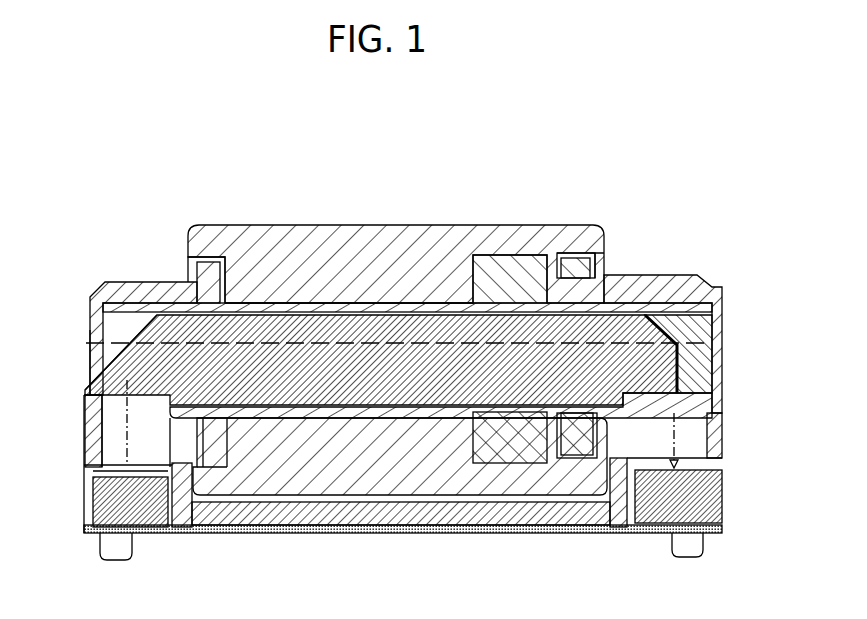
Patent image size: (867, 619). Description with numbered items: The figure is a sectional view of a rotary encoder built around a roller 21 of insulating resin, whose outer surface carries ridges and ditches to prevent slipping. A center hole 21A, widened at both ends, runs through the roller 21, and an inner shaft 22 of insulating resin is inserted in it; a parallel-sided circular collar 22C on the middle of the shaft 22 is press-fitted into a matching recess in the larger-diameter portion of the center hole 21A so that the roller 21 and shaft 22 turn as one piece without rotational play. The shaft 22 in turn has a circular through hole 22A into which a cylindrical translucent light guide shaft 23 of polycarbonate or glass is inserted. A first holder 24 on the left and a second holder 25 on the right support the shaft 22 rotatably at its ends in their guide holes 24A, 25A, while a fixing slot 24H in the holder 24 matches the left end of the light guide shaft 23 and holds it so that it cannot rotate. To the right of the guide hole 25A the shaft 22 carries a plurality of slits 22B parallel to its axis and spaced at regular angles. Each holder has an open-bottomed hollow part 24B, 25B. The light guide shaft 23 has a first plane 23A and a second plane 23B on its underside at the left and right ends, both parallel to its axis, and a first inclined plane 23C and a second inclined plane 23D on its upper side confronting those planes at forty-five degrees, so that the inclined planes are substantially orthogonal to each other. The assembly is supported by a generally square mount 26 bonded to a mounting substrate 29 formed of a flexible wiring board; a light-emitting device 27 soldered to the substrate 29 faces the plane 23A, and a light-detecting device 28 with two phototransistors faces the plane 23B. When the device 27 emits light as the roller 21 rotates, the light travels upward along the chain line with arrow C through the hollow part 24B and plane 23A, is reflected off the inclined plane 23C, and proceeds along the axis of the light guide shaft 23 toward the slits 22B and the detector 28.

The roller 21 is at (338, 260).
The center hole 21A is at (362, 303).
The inner shaft 22 is at (400, 307).
The through hole 22A is at (531, 306).
The slits 22B is at (703, 355).
The collar 22C is at (498, 282).
The light guide shaft 23 is at (250, 330).
The first plane 23A is at (110, 430).
The second plane 23B is at (703, 408).
The first inclined plane 23C is at (137, 330).
The second inclined plane 23D is at (662, 333).
The first holder 24 is at (142, 290).
The guide hole 24A is at (191, 533).
The hollow part 24B is at (105, 432).
The fixing slot 24H is at (88, 359).
The second holder 25 is at (645, 283).
The guide hole 25A is at (585, 420).
The hollow part 25B is at (692, 442).
The mount 26 is at (327, 530).
The light-emitting device 27 is at (110, 508).
The light-detecting device 28 is at (703, 500).
The mounting substrate 29 is at (408, 531).
The arrow C is at (112, 463).